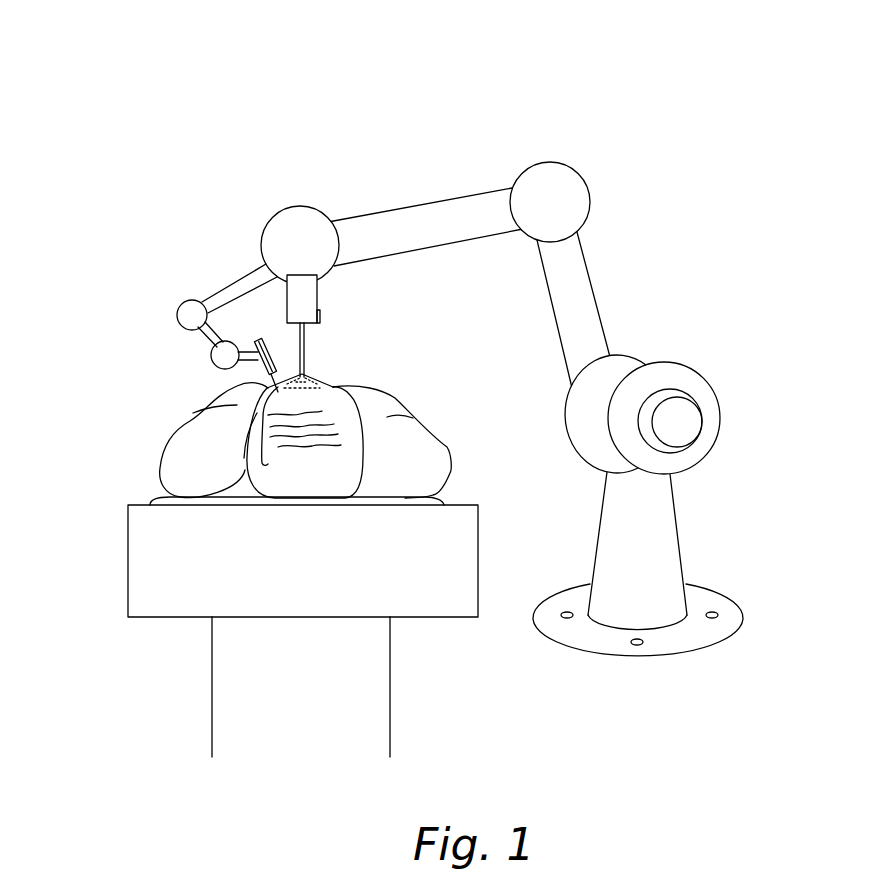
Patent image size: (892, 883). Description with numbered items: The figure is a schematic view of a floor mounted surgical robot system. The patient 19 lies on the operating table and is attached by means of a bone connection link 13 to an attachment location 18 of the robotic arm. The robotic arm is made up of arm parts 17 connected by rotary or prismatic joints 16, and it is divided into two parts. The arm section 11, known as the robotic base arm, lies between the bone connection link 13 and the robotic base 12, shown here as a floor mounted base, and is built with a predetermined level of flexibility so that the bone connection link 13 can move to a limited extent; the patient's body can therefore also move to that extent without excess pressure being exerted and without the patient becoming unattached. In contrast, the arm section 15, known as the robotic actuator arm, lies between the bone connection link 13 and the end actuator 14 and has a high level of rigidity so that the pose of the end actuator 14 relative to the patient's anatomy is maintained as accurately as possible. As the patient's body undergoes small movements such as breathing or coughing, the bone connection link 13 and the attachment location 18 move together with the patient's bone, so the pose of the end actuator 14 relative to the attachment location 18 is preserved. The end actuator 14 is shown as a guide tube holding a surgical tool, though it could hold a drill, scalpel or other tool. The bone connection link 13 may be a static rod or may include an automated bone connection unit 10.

The automated bone connection unit 10 is at (318, 290).
The arm section (robotic base arm) 11 is at (737, 95).
The robotic base 12 is at (682, 550).
The bone connection link 13 is at (305, 348).
The end actuator 14 is at (272, 343).
The arm section (robotic actuator arm) 15 is at (282, 193).
The rotary or prismatic joints 16 is at (592, 208).
The arm parts 17 is at (432, 197).
The attachment location 18 is at (316, 208).
The patient 19 is at (162, 443).